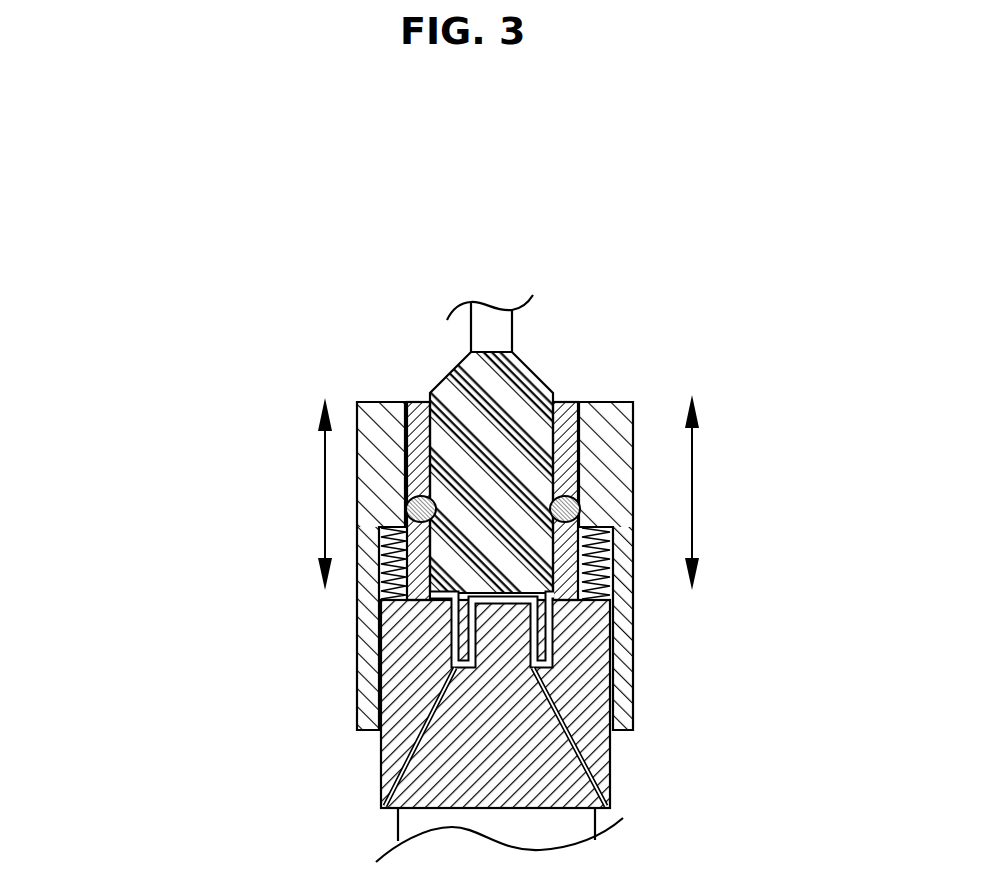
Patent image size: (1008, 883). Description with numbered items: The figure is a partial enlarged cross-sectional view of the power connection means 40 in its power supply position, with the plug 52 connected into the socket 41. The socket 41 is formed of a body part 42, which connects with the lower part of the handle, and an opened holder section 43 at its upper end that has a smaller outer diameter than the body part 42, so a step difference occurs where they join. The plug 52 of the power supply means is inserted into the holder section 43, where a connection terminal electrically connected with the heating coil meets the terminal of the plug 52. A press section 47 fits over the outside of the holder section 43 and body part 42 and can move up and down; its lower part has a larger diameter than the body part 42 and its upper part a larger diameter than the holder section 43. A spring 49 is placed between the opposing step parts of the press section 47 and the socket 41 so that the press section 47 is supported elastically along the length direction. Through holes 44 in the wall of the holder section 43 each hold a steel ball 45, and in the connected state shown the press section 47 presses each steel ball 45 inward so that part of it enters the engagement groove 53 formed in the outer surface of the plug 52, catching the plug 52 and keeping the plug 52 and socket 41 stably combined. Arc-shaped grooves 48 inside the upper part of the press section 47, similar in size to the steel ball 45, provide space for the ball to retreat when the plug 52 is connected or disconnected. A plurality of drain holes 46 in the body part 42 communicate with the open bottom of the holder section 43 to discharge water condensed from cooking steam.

The power connection means 40 is at (298, 291).
The socket 41 is at (131, 722).
The body part 42 is at (404, 718).
The holder section 43 is at (422, 548).
The through hole 44 is at (405, 503).
The steel ball 45 is at (380, 523).
The drain hole 46 is at (590, 752).
The press section 47 is at (363, 611).
The arc-shaped groove 48 is at (640, 422).
The spring 49 is at (633, 554).
The plug 52 is at (527, 385).
The engagement groove 53 is at (580, 502).